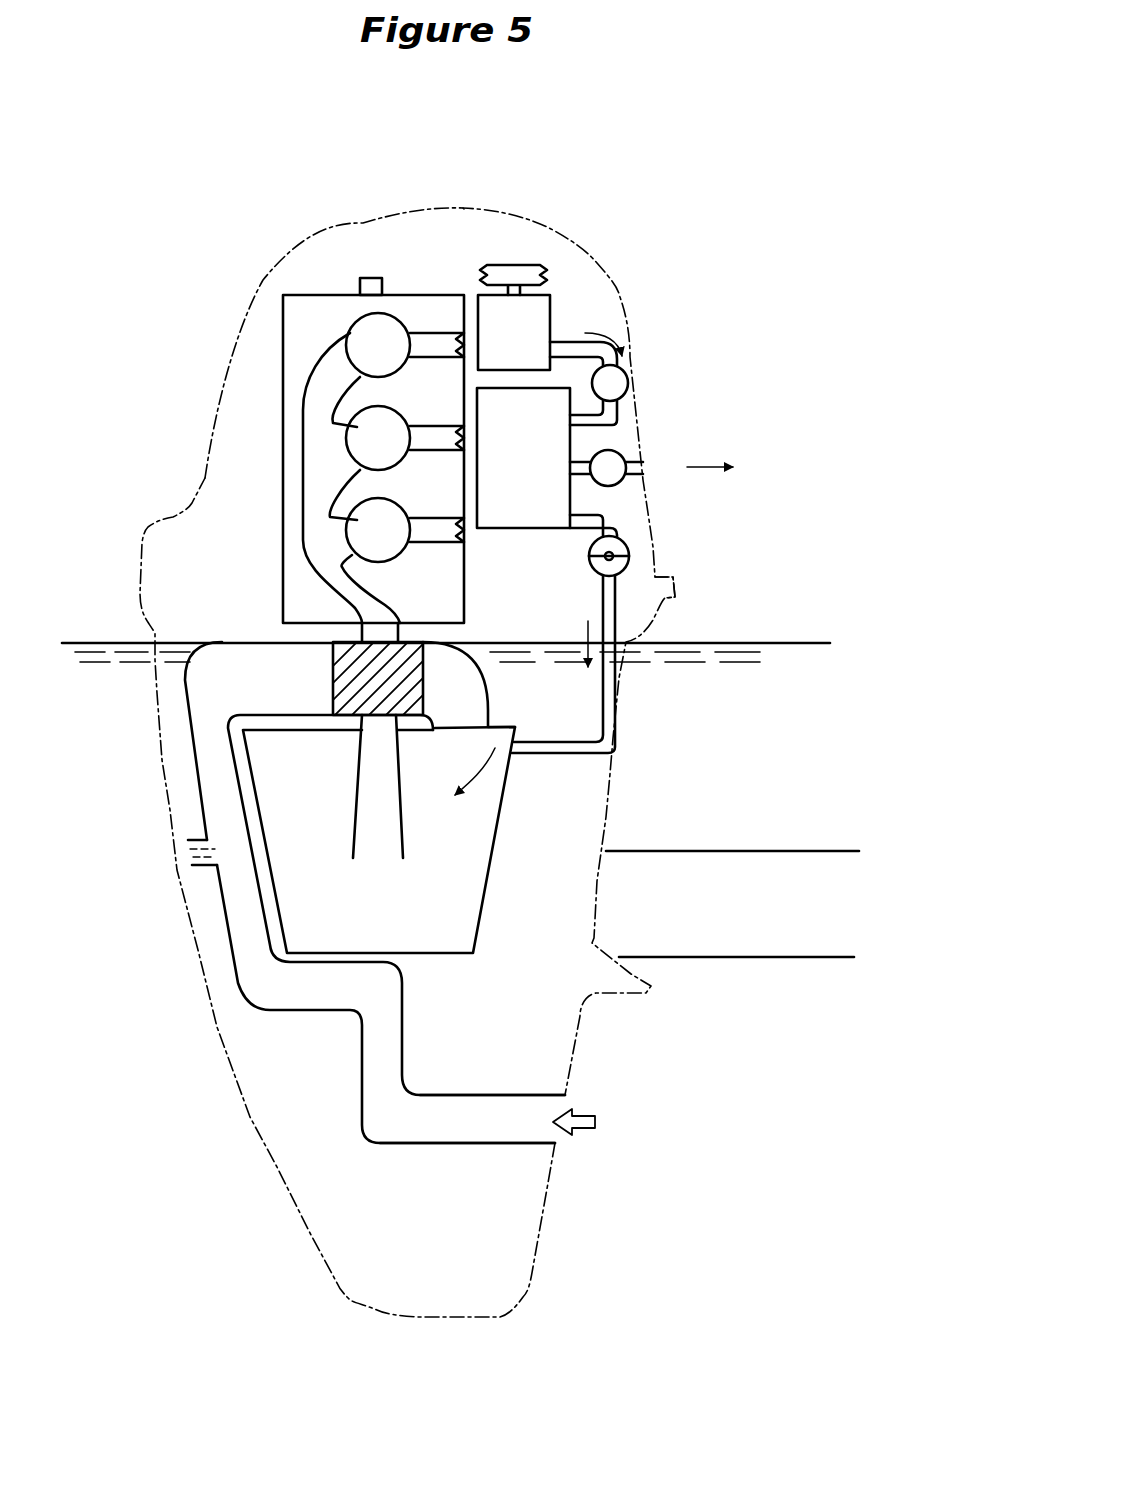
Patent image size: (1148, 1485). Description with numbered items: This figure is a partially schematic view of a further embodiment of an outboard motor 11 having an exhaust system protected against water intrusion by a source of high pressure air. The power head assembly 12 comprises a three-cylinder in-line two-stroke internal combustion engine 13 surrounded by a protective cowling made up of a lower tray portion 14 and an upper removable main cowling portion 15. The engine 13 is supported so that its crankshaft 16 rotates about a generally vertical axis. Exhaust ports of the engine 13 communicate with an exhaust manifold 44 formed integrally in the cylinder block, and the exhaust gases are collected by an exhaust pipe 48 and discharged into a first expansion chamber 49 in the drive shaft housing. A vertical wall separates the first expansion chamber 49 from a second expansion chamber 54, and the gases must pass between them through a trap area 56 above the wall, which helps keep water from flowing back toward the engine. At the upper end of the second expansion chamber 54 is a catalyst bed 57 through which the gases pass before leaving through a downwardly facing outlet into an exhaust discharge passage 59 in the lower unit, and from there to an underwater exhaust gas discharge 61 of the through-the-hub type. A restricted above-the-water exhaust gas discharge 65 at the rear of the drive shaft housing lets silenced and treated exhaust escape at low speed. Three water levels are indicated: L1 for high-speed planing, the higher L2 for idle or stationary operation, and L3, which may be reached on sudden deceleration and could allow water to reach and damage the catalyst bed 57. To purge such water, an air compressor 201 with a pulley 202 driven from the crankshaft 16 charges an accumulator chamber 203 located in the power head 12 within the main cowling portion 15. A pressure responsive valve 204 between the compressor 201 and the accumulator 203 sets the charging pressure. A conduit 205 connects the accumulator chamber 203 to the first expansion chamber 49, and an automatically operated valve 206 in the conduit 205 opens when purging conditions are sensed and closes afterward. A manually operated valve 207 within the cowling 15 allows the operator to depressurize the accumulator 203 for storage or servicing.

The outboard motor 11 is at (652, 410).
The power head assembly 12 is at (600, 262).
The internal combustion engine 13 is at (452, 257).
The lower tray portion 14 is at (657, 620).
The main cowling portion 15 is at (510, 215).
The crankshaft 16 is at (360, 283).
The exhaust manifold 44 is at (318, 487).
The exhaust pipe 48 is at (357, 800).
The first expansion chamber 49 is at (475, 875).
The second expansion chamber 54 is at (227, 808).
The trap area 56 is at (472, 688).
The catalyst bed 57 is at (350, 677).
The exhaust discharge passage 59 is at (401, 1030).
The underwater exhaust gas discharge 61 is at (543, 1140).
The above-the-water exhaust gas discharge 65 is at (195, 840).
The air compressor 201 is at (556, 322).
The pulley 202 is at (518, 265).
The accumulator chamber 203 is at (572, 440).
The pressure responsive valve 204 is at (630, 383).
The conduit 205 is at (616, 530).
The automatically operated valve 206 is at (625, 545).
The manually operated valve 207 is at (603, 487).
The water level L1 is at (761, 960).
The water level L2 is at (754, 854).
The water level L3 is at (478, 646).